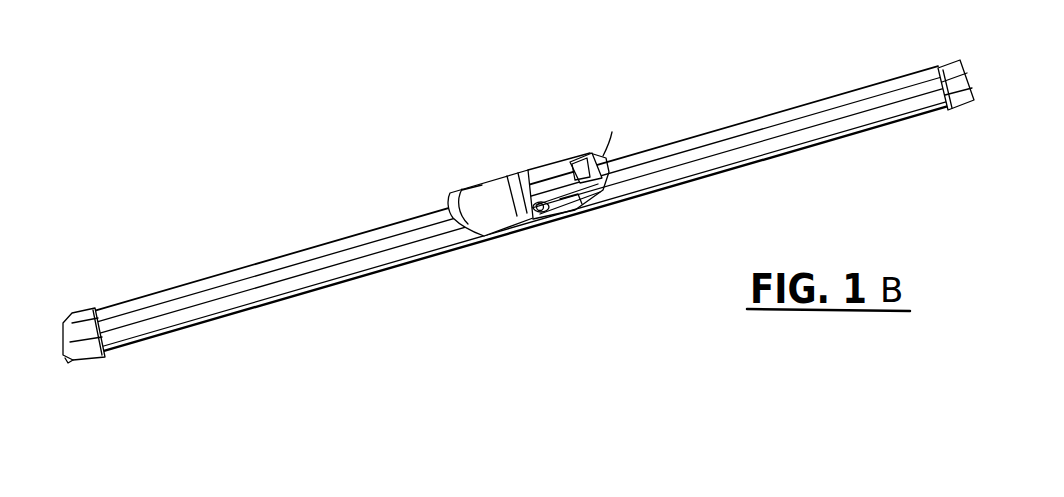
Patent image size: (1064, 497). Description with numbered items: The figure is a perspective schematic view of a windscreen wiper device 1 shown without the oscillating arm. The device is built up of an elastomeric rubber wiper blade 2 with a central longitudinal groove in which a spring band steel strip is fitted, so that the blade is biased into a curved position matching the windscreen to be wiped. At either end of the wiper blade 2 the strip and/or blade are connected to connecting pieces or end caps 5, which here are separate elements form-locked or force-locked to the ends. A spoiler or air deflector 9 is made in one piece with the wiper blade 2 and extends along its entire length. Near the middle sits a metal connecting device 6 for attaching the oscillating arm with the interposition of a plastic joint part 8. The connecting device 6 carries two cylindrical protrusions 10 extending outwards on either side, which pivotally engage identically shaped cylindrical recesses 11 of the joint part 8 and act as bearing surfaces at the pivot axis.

The windscreen wiper device 1 is at (537, 219).
The wiper blade 2 is at (311, 290).
The end caps 5 is at (83, 345).
The connecting device 6 is at (565, 218).
The joint part 8 is at (555, 177).
The spoiler 9 is at (199, 289).
The cylindrical protrusions 10 is at (543, 207).
The cylindrical recesses 11 is at (510, 178).